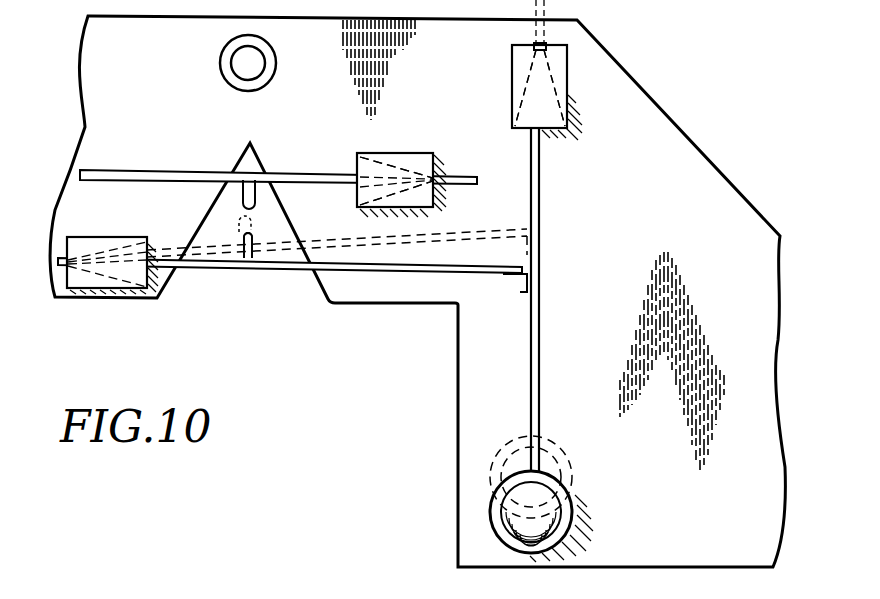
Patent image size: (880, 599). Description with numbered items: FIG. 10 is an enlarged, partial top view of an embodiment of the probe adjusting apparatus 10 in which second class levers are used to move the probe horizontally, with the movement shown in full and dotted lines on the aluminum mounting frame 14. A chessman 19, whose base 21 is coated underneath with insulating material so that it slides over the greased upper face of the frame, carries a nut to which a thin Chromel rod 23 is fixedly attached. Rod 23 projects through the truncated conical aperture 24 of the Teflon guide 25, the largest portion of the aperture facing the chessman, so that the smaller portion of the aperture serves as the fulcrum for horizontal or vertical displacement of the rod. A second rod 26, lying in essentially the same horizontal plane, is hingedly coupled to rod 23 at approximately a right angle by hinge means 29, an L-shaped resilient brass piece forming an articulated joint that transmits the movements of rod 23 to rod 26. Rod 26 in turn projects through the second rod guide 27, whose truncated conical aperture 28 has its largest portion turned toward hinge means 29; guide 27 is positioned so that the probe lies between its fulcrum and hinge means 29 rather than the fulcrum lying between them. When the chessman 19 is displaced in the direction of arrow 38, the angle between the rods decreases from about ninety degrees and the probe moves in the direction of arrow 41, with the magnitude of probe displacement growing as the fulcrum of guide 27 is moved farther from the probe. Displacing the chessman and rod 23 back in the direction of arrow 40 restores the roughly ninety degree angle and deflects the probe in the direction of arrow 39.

The coin apparatus 10 is at (697, 87).
The mounting plate 14 is at (157, 79).
The chessman 19 is at (567, 477).
The base 21 is at (500, 528).
The rod 23 is at (539, 190).
The truncated conical aperture 24 is at (530, 129).
The guide 25 is at (513, 68).
The second rod 26 is at (318, 176).
The second rod guide 27 is at (87, 243).
The truncated conical aperture 28 is at (357, 192).
The hinge means 29 is at (520, 285).
The arrow 38 is at (515, 352).
The arrow 39 is at (227, 212).
The arrow 40 is at (553, 370).
The arrow 41 is at (267, 214).